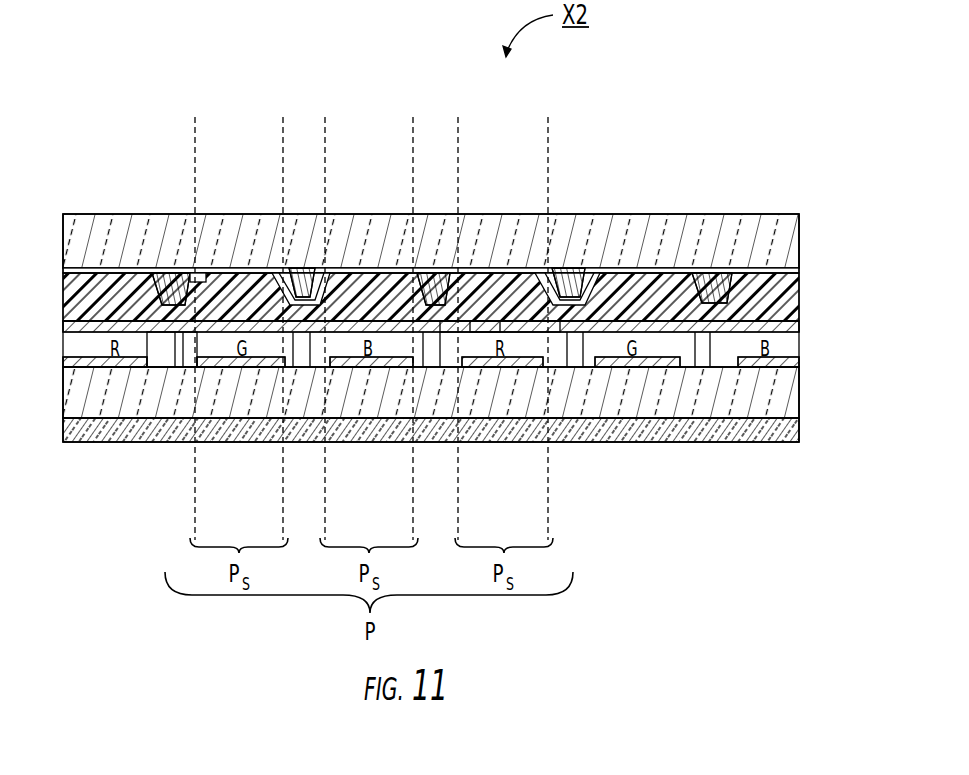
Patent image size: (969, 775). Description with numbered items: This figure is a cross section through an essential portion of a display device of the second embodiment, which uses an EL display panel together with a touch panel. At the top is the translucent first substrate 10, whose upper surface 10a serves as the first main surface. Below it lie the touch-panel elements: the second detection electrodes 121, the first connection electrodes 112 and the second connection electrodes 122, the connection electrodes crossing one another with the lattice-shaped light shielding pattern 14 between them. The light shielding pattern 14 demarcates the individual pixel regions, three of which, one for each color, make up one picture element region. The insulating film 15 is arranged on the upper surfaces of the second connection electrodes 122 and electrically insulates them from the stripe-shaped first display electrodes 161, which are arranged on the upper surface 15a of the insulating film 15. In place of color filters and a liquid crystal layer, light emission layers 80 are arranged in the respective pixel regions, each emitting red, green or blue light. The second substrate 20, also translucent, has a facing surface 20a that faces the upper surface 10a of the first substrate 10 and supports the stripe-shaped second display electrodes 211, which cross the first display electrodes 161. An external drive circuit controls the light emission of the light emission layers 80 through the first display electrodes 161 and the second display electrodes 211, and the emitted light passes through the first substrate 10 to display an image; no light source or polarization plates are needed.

The first substrate 10 is at (330, 242).
The upper surface 10a is at (200, 276).
The light shielding pattern 14 is at (178, 278).
The insulating film 15 is at (533, 281).
The upper surface 15a is at (491, 330).
The second substrate 20 is at (100, 390).
The facing surface 20a is at (192, 367).
The light emission layer 80 is at (265, 347).
The first connection electrode 112 is at (305, 268).
The second detection electrode 121 is at (92, 268).
The second connection electrode 122 is at (271, 276).
The first display electrode 161 is at (678, 328).
The second display electrode 211 is at (640, 360).